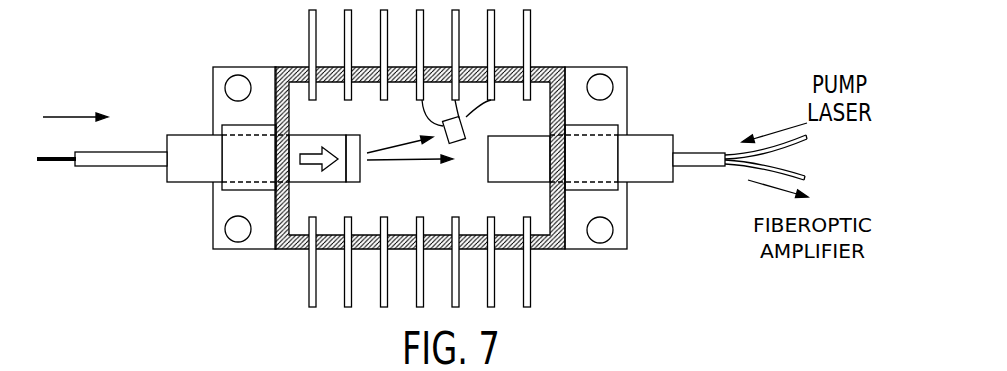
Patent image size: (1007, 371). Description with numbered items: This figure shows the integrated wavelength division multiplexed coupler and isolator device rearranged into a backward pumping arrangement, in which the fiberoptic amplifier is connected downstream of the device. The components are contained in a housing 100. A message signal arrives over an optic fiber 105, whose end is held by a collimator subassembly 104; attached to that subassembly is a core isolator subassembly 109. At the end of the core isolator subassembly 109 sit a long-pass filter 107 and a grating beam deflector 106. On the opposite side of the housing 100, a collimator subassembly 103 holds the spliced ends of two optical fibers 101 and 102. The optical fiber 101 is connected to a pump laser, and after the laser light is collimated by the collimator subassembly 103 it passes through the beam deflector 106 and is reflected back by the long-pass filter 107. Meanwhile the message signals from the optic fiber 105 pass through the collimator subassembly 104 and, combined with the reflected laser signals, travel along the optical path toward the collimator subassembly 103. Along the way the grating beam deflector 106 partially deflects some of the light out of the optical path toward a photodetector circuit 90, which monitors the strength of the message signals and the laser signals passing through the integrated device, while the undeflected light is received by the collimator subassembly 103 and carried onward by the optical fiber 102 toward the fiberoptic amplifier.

The housing 100 is at (549, 67).
The optical fiber 101 is at (746, 156).
The optical fiber 102 is at (745, 164).
The collimator subassembly 103 is at (517, 140).
The collimator subassembly 104 is at (176, 124).
The optic fiber 105 is at (55, 157).
The grating beam deflector 106 is at (353, 174).
The long-pass filter 107 is at (351, 137).
The core isolator subassembly 109 is at (299, 144).
The photodetector circuit 90 is at (464, 143).